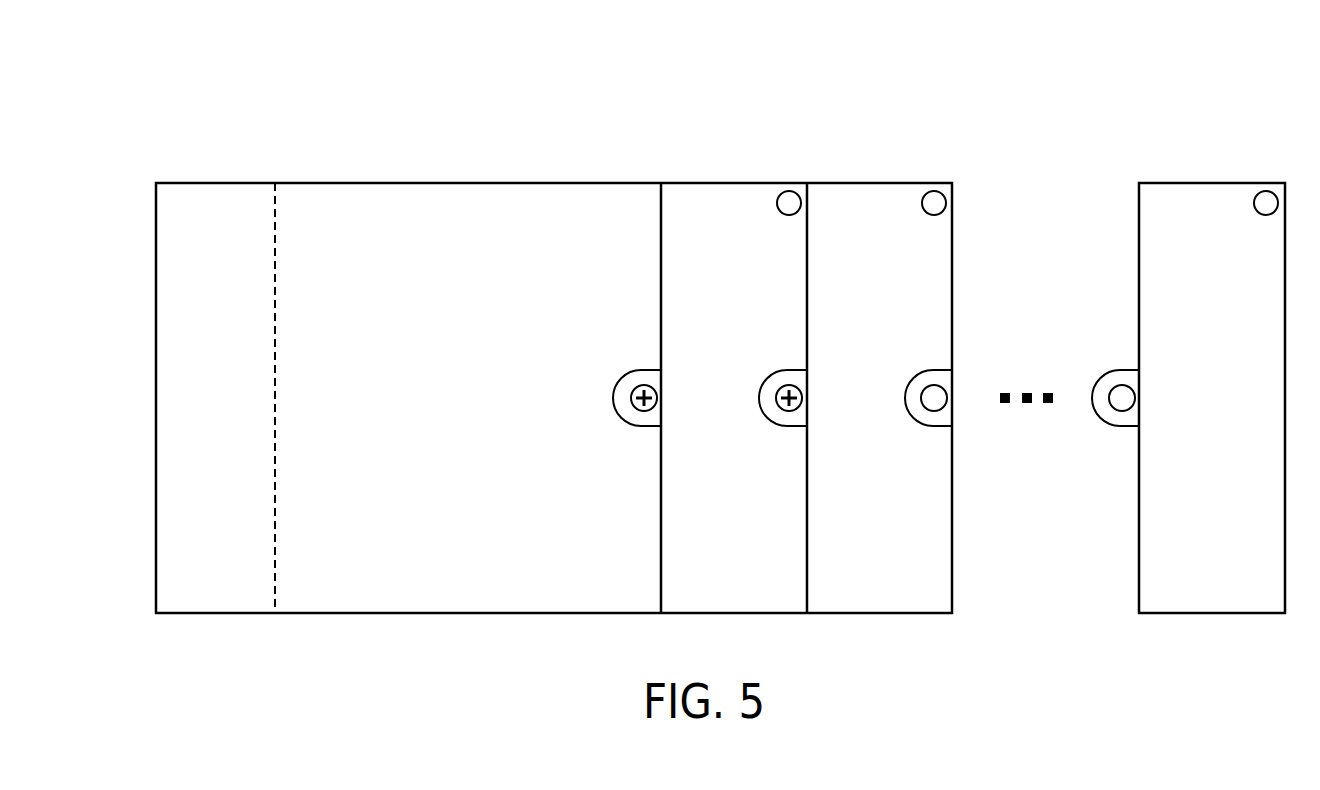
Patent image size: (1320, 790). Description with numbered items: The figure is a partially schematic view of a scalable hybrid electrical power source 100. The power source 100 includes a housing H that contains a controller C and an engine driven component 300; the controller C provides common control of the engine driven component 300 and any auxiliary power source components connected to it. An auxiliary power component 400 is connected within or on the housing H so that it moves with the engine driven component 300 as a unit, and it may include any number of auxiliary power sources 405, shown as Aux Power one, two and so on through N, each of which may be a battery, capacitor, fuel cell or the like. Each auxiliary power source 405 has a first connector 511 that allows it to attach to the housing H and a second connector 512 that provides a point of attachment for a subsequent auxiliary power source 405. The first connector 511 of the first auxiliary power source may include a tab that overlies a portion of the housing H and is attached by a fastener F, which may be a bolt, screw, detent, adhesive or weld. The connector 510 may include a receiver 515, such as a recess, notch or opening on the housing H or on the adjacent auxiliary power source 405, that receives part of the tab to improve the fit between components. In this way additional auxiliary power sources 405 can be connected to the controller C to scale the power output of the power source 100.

The power source 100 is at (473, 142).
The housing H is at (387, 182).
The controller C is at (231, 246).
The engine driven component 300 is at (442, 571).
The auxiliary power component 400 is at (720, 178).
The auxiliary power source 405 is at (745, 200).
The connector 510 is at (633, 431).
The first connector 511 is at (636, 381).
The second connector 512 is at (777, 433).
The receiver 515 is at (930, 378).
The fastener F is at (636, 398).